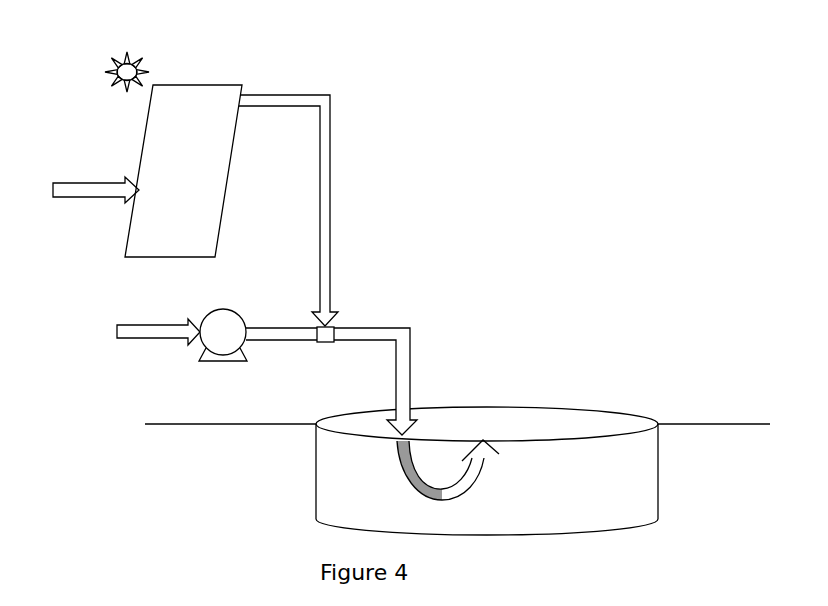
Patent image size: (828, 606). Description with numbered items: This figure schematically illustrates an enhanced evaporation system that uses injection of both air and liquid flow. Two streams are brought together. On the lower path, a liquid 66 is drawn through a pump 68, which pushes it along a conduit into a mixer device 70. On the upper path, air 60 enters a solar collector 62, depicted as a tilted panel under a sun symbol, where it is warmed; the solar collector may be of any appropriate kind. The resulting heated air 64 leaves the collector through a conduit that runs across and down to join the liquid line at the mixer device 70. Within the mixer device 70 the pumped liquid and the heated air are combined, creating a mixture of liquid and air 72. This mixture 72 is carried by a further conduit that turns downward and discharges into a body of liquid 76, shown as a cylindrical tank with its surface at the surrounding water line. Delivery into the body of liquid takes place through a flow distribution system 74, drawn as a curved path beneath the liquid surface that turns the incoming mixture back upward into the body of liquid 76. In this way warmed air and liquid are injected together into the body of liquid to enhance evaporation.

The air 60 is at (90, 190).
The solar collector 62 is at (187, 128).
The heated air 64 is at (332, 184).
The liquid 66 is at (152, 325).
The pump 68 is at (225, 323).
The mixer device 70 is at (323, 343).
The mixture of liquid and air 72 is at (410, 372).
The flow distribution system 74 is at (448, 470).
The body of liquid 76 is at (622, 484).